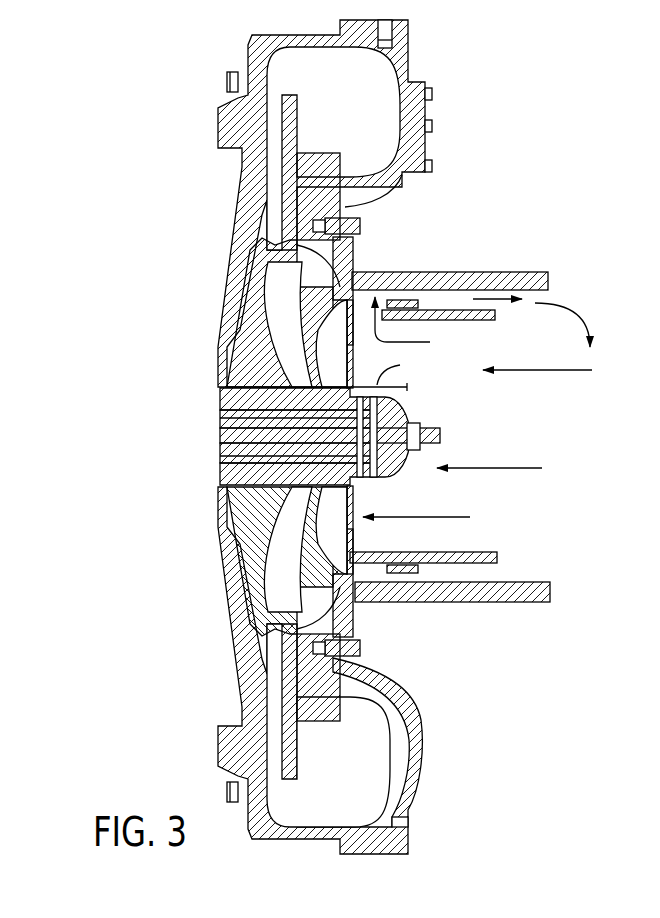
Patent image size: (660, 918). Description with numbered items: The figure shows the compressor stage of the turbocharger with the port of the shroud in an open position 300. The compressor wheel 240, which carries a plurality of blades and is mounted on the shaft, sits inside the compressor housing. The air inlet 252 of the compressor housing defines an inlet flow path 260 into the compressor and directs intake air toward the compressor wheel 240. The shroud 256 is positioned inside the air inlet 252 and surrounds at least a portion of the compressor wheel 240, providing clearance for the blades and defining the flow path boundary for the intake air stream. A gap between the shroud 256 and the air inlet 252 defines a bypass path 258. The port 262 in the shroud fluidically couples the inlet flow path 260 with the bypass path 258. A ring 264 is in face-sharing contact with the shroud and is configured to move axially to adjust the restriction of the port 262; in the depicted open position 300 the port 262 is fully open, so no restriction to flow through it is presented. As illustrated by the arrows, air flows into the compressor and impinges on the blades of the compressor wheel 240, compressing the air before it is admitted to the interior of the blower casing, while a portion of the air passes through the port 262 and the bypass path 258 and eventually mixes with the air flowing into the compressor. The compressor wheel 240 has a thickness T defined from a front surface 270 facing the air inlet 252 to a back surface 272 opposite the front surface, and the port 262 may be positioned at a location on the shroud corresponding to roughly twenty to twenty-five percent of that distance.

The open position 300 is at (326, 437).
The compressor wheel 240 is at (247, 477).
The air inlet 252 is at (537, 272).
The shroud 256 is at (483, 320).
The bypass path 258 is at (455, 297).
The inlet flow path 260 is at (541, 416).
The port 262 is at (366, 300).
The ring 264 is at (404, 300).
The front surface 270 is at (405, 410).
The back surface 272 is at (220, 420).